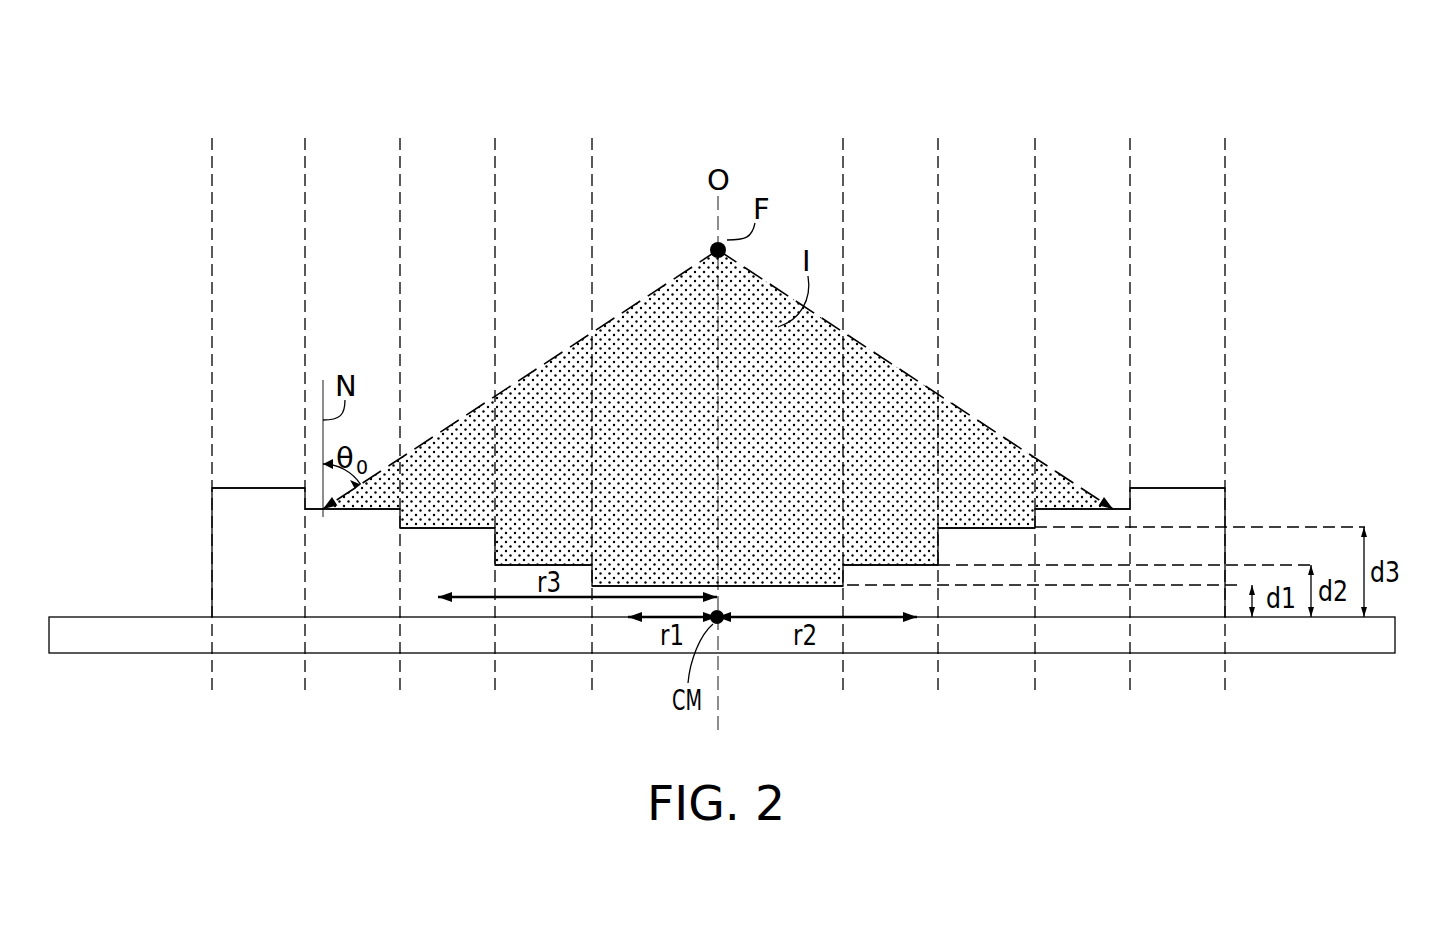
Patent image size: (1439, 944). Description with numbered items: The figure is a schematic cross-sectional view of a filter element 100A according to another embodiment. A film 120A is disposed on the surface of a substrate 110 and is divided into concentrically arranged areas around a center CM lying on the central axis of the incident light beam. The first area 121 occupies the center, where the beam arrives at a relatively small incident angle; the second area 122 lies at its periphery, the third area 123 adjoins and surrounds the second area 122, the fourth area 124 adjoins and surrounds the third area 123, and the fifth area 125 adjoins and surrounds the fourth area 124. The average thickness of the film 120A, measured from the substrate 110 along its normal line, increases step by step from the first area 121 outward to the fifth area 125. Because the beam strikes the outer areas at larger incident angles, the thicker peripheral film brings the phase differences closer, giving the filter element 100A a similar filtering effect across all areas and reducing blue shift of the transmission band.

The filter element 100A is at (1419, 743).
The substrate 110 is at (73, 622).
The film 120A is at (213, 546).
The first area 121 is at (843, 138).
The second area 122 is at (592, 138).
The third area 123 is at (495, 138).
The fourth area 124 is at (400, 138).
The fifth area 125 is at (305, 138).